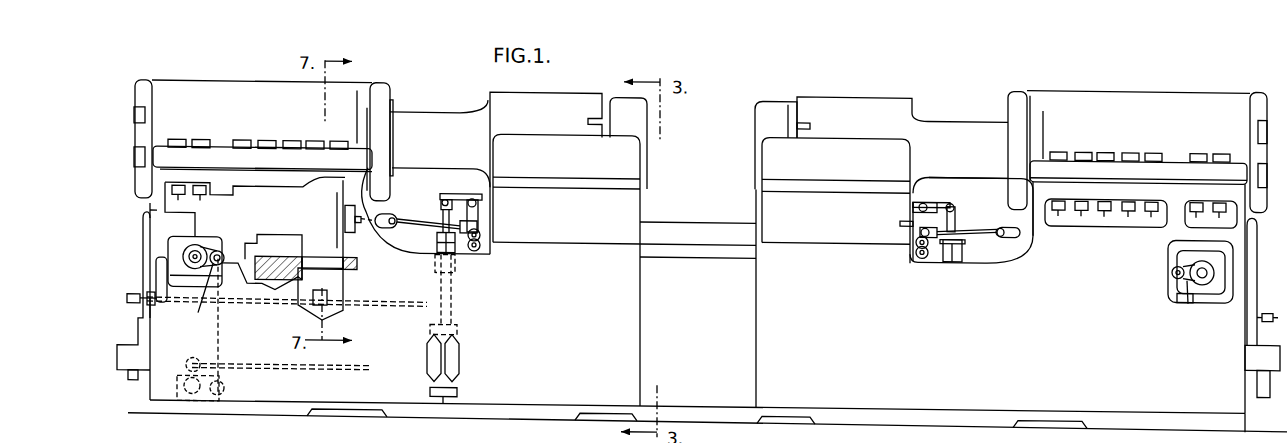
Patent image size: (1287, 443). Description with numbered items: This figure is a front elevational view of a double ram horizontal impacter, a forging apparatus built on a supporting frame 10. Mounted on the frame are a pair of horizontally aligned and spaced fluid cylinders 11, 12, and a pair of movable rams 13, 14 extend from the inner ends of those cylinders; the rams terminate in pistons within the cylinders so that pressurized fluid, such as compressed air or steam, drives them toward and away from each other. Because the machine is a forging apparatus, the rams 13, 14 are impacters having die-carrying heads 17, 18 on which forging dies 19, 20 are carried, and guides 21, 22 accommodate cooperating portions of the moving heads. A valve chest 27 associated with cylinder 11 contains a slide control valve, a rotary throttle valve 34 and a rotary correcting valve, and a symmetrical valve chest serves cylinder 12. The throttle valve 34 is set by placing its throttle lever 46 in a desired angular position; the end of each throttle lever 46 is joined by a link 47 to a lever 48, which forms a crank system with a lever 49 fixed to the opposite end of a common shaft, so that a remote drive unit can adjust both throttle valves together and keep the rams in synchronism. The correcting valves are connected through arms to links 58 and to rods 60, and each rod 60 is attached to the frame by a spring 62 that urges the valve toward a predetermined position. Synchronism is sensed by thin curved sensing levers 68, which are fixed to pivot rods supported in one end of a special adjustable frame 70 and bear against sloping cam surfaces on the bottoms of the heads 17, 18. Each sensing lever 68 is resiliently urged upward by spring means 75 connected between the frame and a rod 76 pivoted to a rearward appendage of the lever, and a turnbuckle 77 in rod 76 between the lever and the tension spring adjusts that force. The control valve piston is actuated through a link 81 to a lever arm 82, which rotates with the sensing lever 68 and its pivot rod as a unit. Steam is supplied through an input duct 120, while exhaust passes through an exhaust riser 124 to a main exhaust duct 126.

The supporting frame 10 is at (1149, 393).
The fluid cylinder 11 is at (225, 86).
The fluid cylinder 12 is at (1083, 87).
The movable ram 13 is at (428, 118).
The movable ram 14 is at (958, 117).
The die-carrying head 17 is at (562, 97).
The die-carrying head 18 is at (833, 95).
The forging die 19 is at (637, 117).
The forging die 20 is at (770, 110).
The guide 21 is at (627, 181).
The guide 22 is at (767, 180).
The valve chest 27 is at (328, 223).
The throttle valve 34 is at (202, 244).
The throttle lever 46 is at (684, 303).
The link 47 is at (218, 347).
The lever 48 is at (224, 387).
The lever 49 is at (186, 366).
The link 58 is at (378, 299).
The rod 60 is at (280, 301).
The spring 62 is at (135, 293).
The sensing lever 68 is at (462, 193).
The adjustable frame 70 is at (485, 224).
The spring means 75 is at (448, 357).
The rod 76 is at (452, 296).
The turnbuckle 77 is at (433, 234).
The link 81 is at (408, 217).
The lever arm 82 is at (477, 211).
The input duct 120 is at (127, 368).
The exhaust riser 124 is at (145, 268).
The main exhaust duct 126 is at (145, 337).